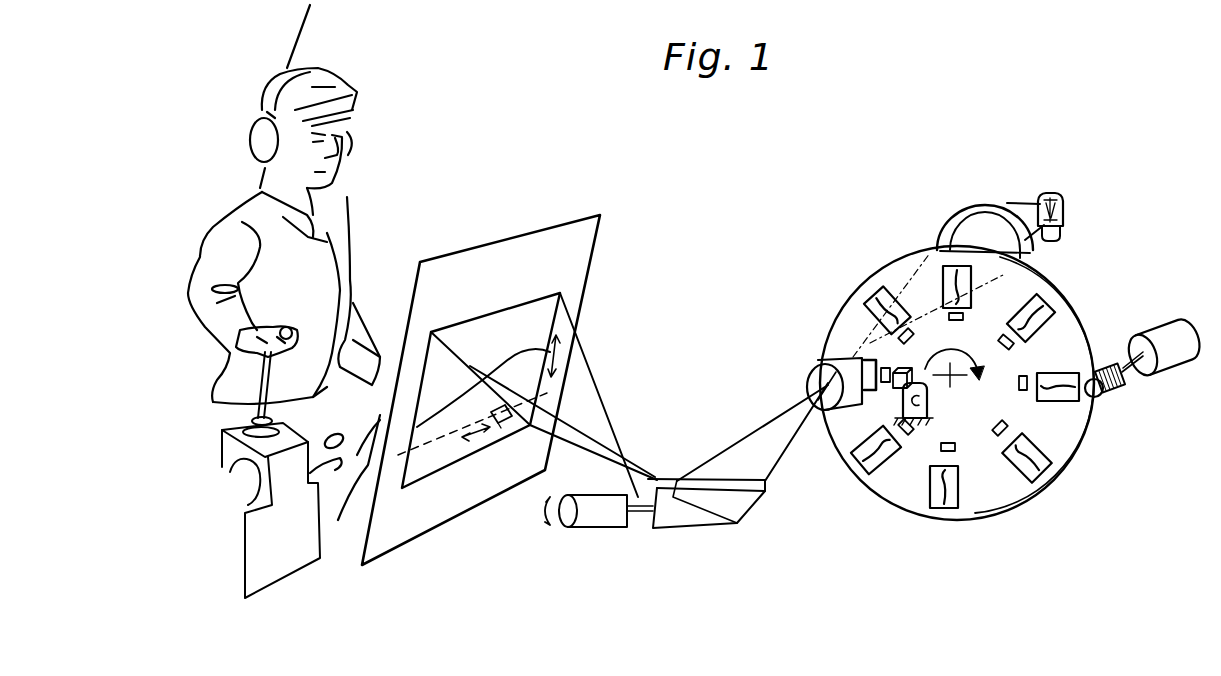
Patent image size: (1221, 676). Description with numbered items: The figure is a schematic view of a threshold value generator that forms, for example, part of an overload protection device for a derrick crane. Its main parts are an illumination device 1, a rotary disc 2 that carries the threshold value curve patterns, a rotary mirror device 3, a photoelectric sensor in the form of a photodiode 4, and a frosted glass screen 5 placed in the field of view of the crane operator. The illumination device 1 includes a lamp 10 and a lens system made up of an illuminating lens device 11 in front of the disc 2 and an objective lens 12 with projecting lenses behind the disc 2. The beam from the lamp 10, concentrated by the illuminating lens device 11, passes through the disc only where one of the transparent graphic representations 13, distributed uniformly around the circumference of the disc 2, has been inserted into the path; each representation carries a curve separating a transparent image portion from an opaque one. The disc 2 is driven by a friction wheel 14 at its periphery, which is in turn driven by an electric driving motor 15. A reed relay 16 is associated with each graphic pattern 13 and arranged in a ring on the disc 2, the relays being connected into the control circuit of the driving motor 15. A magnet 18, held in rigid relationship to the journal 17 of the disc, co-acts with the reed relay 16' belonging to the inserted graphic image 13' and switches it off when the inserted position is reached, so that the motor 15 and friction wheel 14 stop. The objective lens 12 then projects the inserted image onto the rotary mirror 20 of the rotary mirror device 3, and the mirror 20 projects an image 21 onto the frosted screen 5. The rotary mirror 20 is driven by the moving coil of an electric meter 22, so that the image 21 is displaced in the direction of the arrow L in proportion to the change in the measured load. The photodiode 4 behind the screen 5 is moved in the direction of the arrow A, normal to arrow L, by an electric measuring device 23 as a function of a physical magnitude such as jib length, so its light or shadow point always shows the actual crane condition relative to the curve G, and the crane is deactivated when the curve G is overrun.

The illumination device 1 is at (988, 178).
The rotary disc 2 is at (934, 547).
The rotary mirror device 3 is at (690, 540).
The photodiode 4 is at (530, 416).
The frosted glass screen 5 is at (490, 245).
The lamp 10 is at (1062, 195).
The illuminating lens device 11 is at (958, 248).
The objective lens 12 is at (818, 378).
The transparent graphic representations 13 is at (983, 406).
The inserted graphic image 13' is at (810, 328).
The friction wheel 14 is at (1110, 397).
The electric driving motor 15 is at (1176, 382).
The reed relay 16 is at (1018, 394).
The reed relay corresponding to inserted image 16' is at (845, 324).
The journal 17 is at (920, 425).
The magnet 18 is at (892, 378).
The rotary mirror 20 is at (752, 512).
The image 21 is at (450, 330).
The electric meter 22 is at (592, 526).
The electric measuring device 23 is at (643, 519).
The arrow A is at (478, 450).
The curve G is at (515, 346).
The arrow L is at (565, 360).